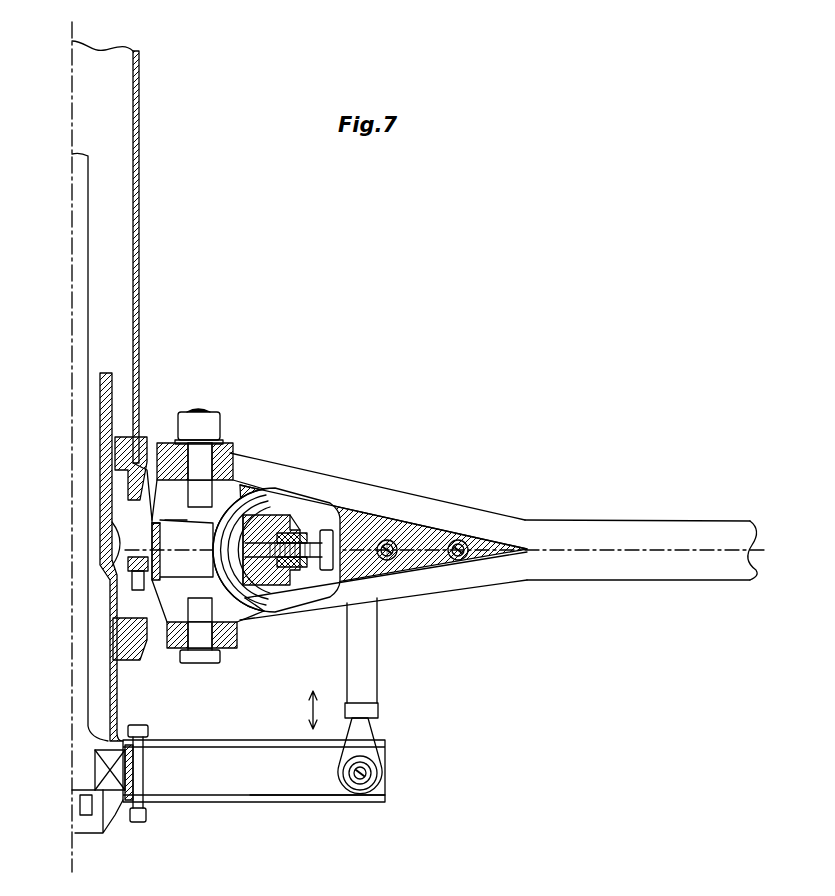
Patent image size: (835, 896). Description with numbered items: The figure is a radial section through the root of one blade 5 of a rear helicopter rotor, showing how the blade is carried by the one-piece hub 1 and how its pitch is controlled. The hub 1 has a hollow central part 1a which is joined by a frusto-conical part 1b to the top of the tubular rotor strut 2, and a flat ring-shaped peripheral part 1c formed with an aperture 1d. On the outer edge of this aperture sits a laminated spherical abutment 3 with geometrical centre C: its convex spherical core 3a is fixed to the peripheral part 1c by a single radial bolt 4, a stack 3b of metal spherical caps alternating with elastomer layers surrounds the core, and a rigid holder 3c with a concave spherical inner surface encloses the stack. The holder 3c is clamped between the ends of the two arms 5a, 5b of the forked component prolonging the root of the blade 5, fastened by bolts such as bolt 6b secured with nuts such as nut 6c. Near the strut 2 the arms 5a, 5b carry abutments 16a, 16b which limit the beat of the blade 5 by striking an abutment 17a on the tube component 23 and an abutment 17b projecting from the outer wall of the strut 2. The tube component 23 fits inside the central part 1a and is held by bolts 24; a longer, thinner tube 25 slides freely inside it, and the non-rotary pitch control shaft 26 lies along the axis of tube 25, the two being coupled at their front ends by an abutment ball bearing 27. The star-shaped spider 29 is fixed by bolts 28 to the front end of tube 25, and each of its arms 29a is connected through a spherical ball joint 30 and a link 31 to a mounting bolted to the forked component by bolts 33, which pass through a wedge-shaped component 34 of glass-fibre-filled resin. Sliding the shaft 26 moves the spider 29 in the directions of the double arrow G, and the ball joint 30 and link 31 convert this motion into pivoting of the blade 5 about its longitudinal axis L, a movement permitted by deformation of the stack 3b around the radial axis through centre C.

The hub 1 is at (163, 586).
The central part 1a is at (155, 535).
The frusto-conical part 1b is at (143, 517).
The peripheral part 1c is at (300, 533).
The aperture 1d is at (173, 537).
The rotor strut 2 is at (142, 255).
The laminated spherical abutment 3 is at (277, 507).
The core 3a is at (305, 490).
The stack 3b is at (263, 490).
The holder 3c is at (240, 615).
The bolt 4 is at (320, 563).
The blade 5 is at (593, 530).
The arm 5a is at (437, 590).
The arm 5b is at (422, 502).
The bolt 6b is at (198, 632).
The nut 6c is at (215, 420).
The abutment 16a is at (160, 625).
The abutment 16b is at (150, 450).
The abutment 17a is at (123, 617).
The abutment 17b is at (133, 470).
The tube component 23 is at (120, 540).
The bolt 24 is at (133, 578).
The tube 25 is at (108, 710).
The pitch control shaft 26 is at (80, 245).
The abutment ball bearing 27 is at (107, 792).
The bolt 28 is at (140, 768).
The star-shaped component 29 is at (199, 814).
The arm 29a is at (253, 790).
The spherical ball joint 30 is at (372, 775).
The link 31 is at (360, 678).
The bolt 33 is at (460, 537).
The wedge-shaped component 34 is at (420, 520).
The geometrical centre C is at (390, 527).
The double arrow G is at (322, 710).
The longitudinal axis L is at (683, 550).